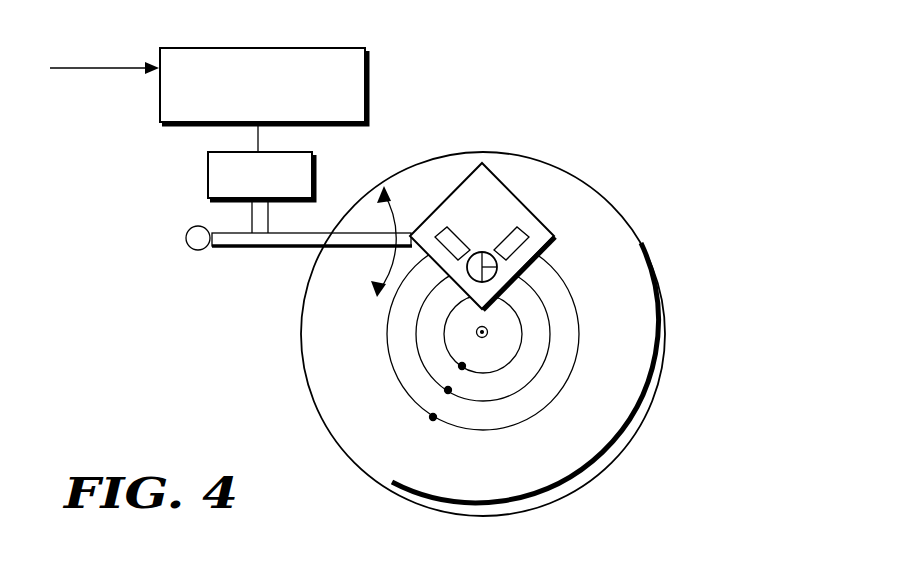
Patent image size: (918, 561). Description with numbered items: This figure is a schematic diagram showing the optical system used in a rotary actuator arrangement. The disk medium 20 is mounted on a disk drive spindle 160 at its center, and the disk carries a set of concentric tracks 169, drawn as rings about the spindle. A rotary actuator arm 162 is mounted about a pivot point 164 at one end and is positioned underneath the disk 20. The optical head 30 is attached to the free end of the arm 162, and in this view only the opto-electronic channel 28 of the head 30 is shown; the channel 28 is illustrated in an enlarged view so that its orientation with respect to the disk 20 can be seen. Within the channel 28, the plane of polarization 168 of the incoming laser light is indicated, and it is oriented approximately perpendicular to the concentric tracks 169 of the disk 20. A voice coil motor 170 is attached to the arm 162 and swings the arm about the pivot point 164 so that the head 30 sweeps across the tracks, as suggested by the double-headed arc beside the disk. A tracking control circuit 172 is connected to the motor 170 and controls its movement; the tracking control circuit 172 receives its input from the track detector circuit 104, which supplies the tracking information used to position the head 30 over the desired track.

The disk medium 20 is at (307, 388).
The opto-electronic channel 28 is at (522, 203).
The optical head 30 is at (477, 172).
The track detector circuit 104 is at (104, 59).
The disk drive spindle 160 is at (488, 335).
The rotary actuator arm 162 is at (281, 248).
The pivot point 164 is at (186, 240).
The plane of polarization 168 is at (503, 284).
The concentric tracks 169 is at (462, 366).
The voice coil motor 170 is at (313, 168).
The tracking control circuit 172 is at (160, 89).